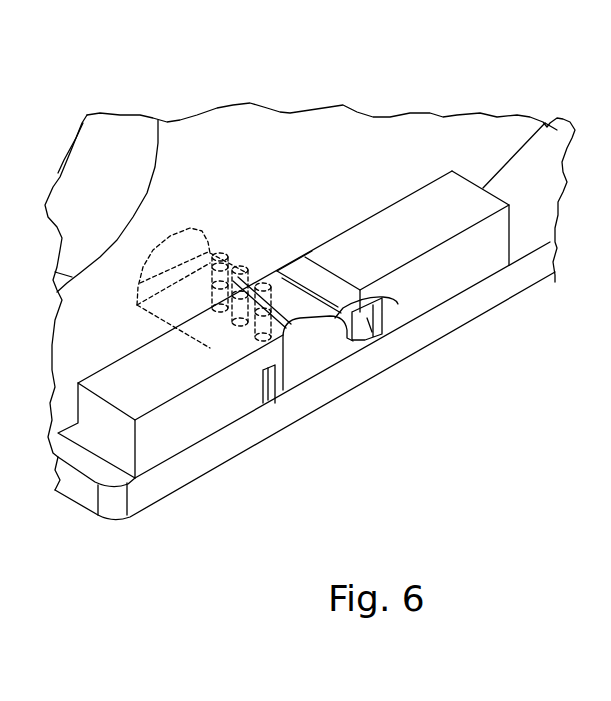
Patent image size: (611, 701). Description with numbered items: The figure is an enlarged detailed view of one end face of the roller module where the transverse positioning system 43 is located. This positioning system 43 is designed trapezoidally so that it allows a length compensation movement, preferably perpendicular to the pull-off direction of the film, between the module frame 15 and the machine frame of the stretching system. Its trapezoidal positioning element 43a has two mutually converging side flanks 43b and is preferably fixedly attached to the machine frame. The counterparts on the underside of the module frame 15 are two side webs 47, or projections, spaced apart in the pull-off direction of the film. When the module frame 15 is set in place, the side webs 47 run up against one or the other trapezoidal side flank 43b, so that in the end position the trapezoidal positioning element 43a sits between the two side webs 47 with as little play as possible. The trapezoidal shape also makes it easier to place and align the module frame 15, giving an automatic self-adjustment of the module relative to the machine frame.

The module frame 15 is at (242, 145).
The transverse positioning system 43 is at (305, 374).
The trapezoidal positioning element 43a is at (315, 338).
The trapezoidal side flank 43b is at (277, 350).
The side web 47 is at (273, 383).